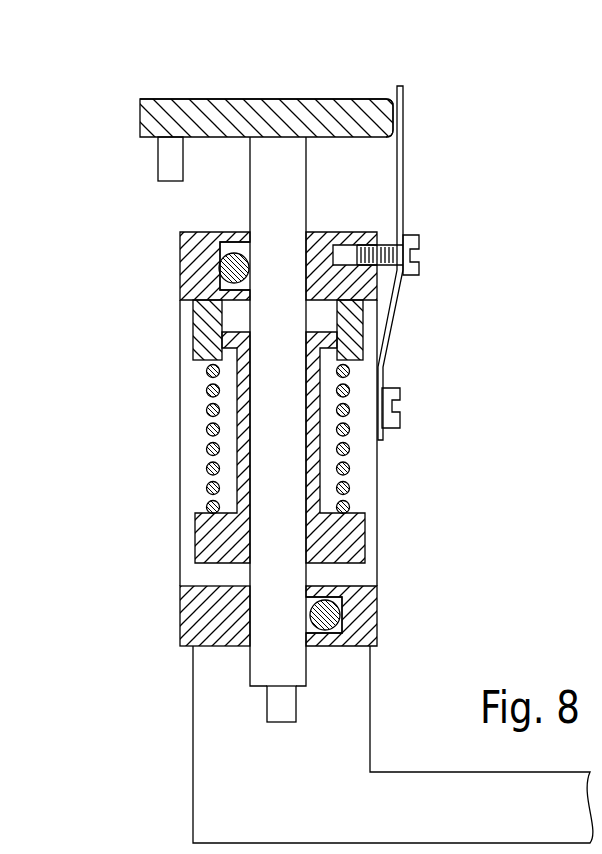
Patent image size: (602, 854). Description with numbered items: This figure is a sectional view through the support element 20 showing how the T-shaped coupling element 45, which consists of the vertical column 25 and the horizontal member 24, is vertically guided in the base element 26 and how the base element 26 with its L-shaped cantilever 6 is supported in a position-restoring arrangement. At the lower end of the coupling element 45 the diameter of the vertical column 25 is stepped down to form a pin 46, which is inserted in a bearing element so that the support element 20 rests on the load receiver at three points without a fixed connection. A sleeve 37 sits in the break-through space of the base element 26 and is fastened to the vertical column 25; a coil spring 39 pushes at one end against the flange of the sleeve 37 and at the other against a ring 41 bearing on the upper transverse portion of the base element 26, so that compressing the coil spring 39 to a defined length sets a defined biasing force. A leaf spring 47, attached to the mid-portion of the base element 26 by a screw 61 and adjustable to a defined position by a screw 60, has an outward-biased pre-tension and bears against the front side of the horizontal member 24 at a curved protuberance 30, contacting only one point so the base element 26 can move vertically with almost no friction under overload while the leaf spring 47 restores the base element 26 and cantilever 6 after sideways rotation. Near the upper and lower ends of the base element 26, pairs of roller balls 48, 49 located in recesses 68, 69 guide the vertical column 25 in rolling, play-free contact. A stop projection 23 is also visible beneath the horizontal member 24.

The support element 20 is at (137, 90).
The horizontal member 24 is at (270, 98).
The coupling element 45 is at (212, 96).
The protuberance 30 is at (388, 123).
The stop projection 23 is at (170, 160).
The vertical column 25 is at (290, 180).
The pin 46 is at (283, 710).
The base element 26 is at (368, 490).
The recess 68 is at (225, 249).
The roller balls 48 is at (218, 269).
The recess 69 is at (345, 597).
The roller balls 49 is at (336, 621).
The ring 41 is at (195, 322).
The sleeve 37 is at (238, 403).
The coil spring 39 is at (210, 449).
The leaf spring 47 is at (405, 173).
The screw 60 is at (419, 245).
The screw 61 is at (400, 393).
The cantilever 6 is at (205, 790).